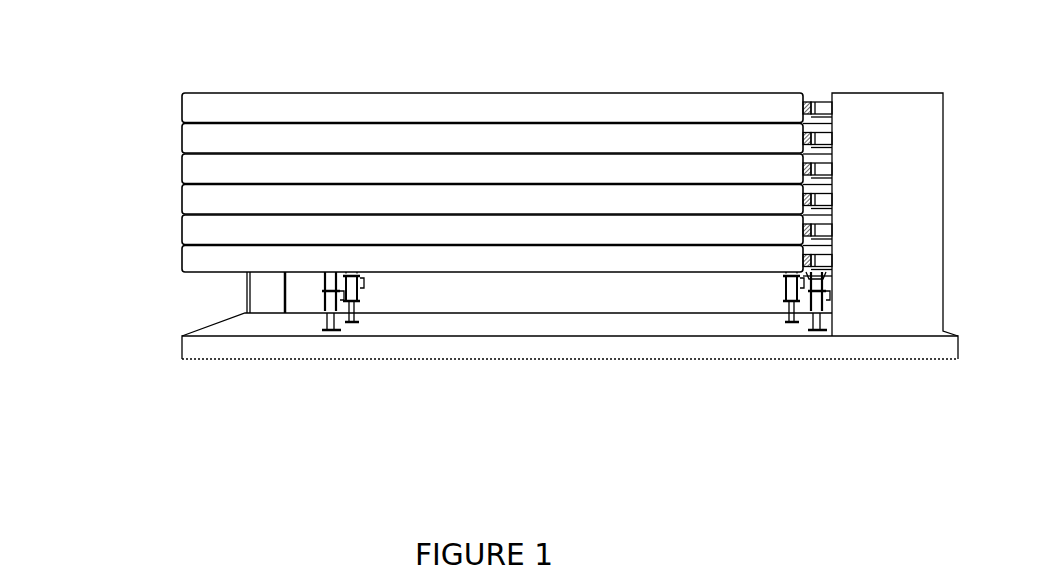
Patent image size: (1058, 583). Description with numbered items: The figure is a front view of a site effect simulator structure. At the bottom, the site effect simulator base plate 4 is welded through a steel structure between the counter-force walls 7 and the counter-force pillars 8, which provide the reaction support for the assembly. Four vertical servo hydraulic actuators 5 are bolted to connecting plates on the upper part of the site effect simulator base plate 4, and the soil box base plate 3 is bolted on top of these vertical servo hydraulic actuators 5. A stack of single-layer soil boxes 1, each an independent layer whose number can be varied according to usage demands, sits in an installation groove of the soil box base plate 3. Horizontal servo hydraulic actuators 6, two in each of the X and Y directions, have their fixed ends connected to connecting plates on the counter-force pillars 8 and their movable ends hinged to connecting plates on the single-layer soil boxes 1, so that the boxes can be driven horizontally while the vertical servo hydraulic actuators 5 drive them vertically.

The single-layer soil box 1 is at (182, 108).
The soil box base plate 3 is at (182, 259).
The site effect simulator base plate 4 is at (570, 337).
The vertical servo hydraulic actuator 5 is at (334, 301).
The horizontal servo hydraulic actuator 6 is at (825, 112).
The counter-force wall 7 is at (888, 108).
The counter-force pillar 8 is at (269, 310).